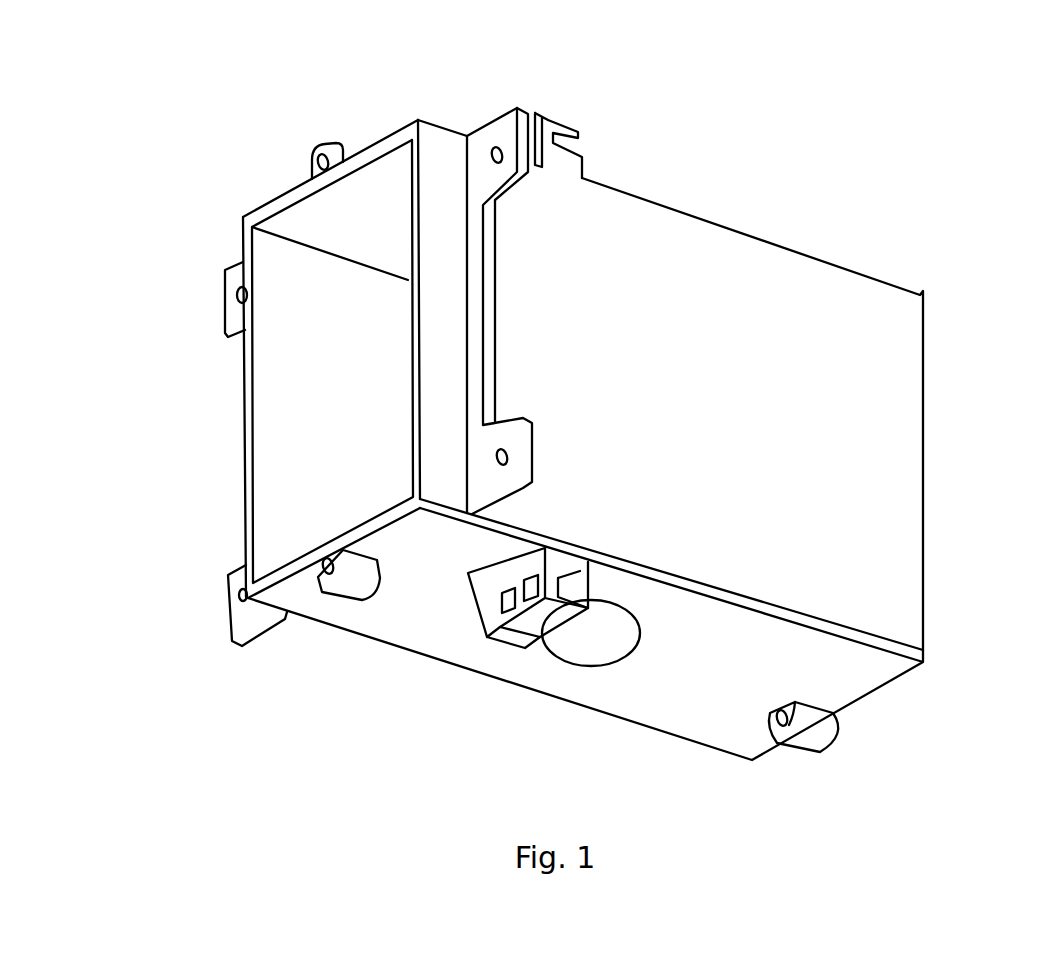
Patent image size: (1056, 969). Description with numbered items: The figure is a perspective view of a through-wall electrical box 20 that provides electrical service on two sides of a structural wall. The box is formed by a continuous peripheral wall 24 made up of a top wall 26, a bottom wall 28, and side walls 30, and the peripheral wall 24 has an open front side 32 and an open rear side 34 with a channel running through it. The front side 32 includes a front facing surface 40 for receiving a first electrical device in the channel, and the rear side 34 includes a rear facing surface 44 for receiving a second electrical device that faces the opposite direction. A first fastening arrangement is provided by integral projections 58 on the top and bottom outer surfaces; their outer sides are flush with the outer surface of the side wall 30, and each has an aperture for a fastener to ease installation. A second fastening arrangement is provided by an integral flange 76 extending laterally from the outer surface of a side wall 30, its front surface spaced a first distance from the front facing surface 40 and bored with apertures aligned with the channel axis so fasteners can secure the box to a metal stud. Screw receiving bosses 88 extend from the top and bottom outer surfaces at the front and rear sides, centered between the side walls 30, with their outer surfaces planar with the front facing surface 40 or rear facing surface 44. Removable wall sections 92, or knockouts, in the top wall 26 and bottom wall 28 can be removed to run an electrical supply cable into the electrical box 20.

The through-wall electrical box 20 is at (737, 110).
The continuous peripheral wall 24 is at (727, 298).
The top wall 26 is at (336, 221).
The bottom wall 28 is at (684, 671).
The side walls 30 is at (703, 418).
The open front side 32 is at (245, 407).
The open rear side 34 is at (925, 477).
The front facing surface 40 is at (416, 319).
The rear facing surface 44 is at (925, 552).
The integral projections 58 is at (549, 118).
The integral flange 76 is at (485, 180).
The screw receiving bosses 88 is at (342, 152).
The removable wall sections 92 is at (586, 646).